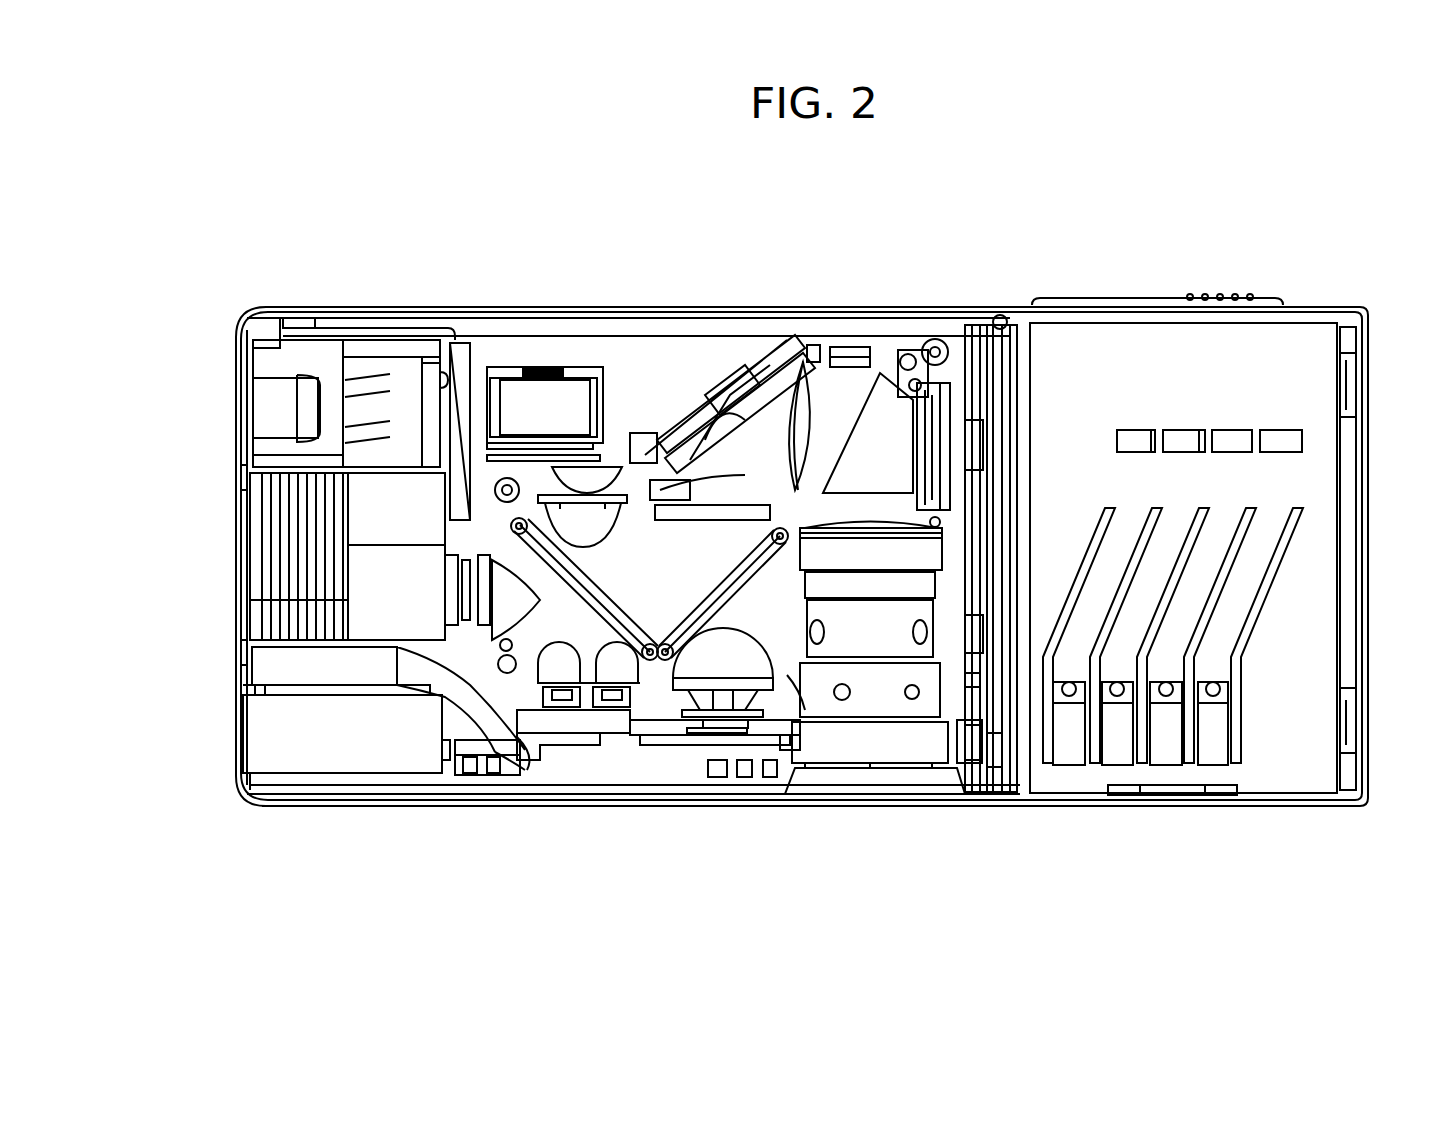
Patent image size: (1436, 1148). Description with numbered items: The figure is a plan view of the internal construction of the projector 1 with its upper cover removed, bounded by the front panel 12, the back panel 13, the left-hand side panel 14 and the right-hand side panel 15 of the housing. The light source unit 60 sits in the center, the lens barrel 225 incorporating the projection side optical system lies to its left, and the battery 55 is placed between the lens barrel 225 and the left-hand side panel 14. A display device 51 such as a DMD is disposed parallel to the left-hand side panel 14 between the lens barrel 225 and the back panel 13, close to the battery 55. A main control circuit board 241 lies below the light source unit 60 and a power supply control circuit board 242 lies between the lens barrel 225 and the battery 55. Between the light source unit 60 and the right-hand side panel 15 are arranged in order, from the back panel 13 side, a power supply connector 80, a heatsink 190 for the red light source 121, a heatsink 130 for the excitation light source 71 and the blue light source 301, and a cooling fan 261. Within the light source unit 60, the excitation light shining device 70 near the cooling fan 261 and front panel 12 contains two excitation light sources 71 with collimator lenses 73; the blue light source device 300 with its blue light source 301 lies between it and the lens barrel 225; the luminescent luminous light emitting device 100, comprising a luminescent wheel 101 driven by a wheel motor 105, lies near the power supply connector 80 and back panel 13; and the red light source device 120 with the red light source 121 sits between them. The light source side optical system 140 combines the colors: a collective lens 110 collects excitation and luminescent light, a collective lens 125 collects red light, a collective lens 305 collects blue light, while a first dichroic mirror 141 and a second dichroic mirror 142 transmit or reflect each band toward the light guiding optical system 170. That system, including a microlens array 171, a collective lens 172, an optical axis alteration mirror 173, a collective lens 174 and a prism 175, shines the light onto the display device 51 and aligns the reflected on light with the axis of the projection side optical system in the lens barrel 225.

The projector 1 is at (1338, 270).
The front panel 12 is at (345, 807).
The back panel 13 is at (305, 307).
The left-hand side panel 14 is at (1360, 410).
The right-hand side panel 15 is at (250, 492).
The display device 51 is at (1015, 320).
The battery 55 is at (1245, 360).
The light source unit 60 is at (668, 732).
The excitation light shining device 70 is at (537, 747).
The excitation light source 71 is at (552, 708).
The collimator lens 73 is at (558, 648).
The power supply connector 80 is at (275, 360).
The luminescent luminous light emitting device 100 is at (502, 367).
The luminescent wheel 101 is at (555, 447).
The wheel motor 105 is at (530, 405).
The collective lens 110 is at (607, 456).
The red light source device 120 is at (442, 593).
The red light source 121 is at (447, 560).
The collective lens 125 is at (482, 640).
The heatsink 130 is at (275, 665).
The light source side optical system 140 is at (655, 690).
The first dichroic mirror 141 is at (600, 598).
The second dichroic mirror 142 is at (718, 598).
The light guiding optical system 170 is at (838, 400).
The microlens array 171 is at (718, 510).
The collective lens 172 is at (748, 505).
The optical axis alteration mirror 173 is at (818, 349).
The collective lens 174 is at (893, 400).
The prism 175 is at (925, 395).
The heatsink 190 is at (280, 500).
The lens barrel 225 is at (895, 742).
The main control circuit board 241 is at (790, 676).
The power supply control circuit board 242 is at (997, 683).
The cooling fan 261 is at (275, 745).
The blue light source device 300 is at (747, 750).
The blue light source 301 is at (725, 730).
The collective lens 305 is at (777, 707).